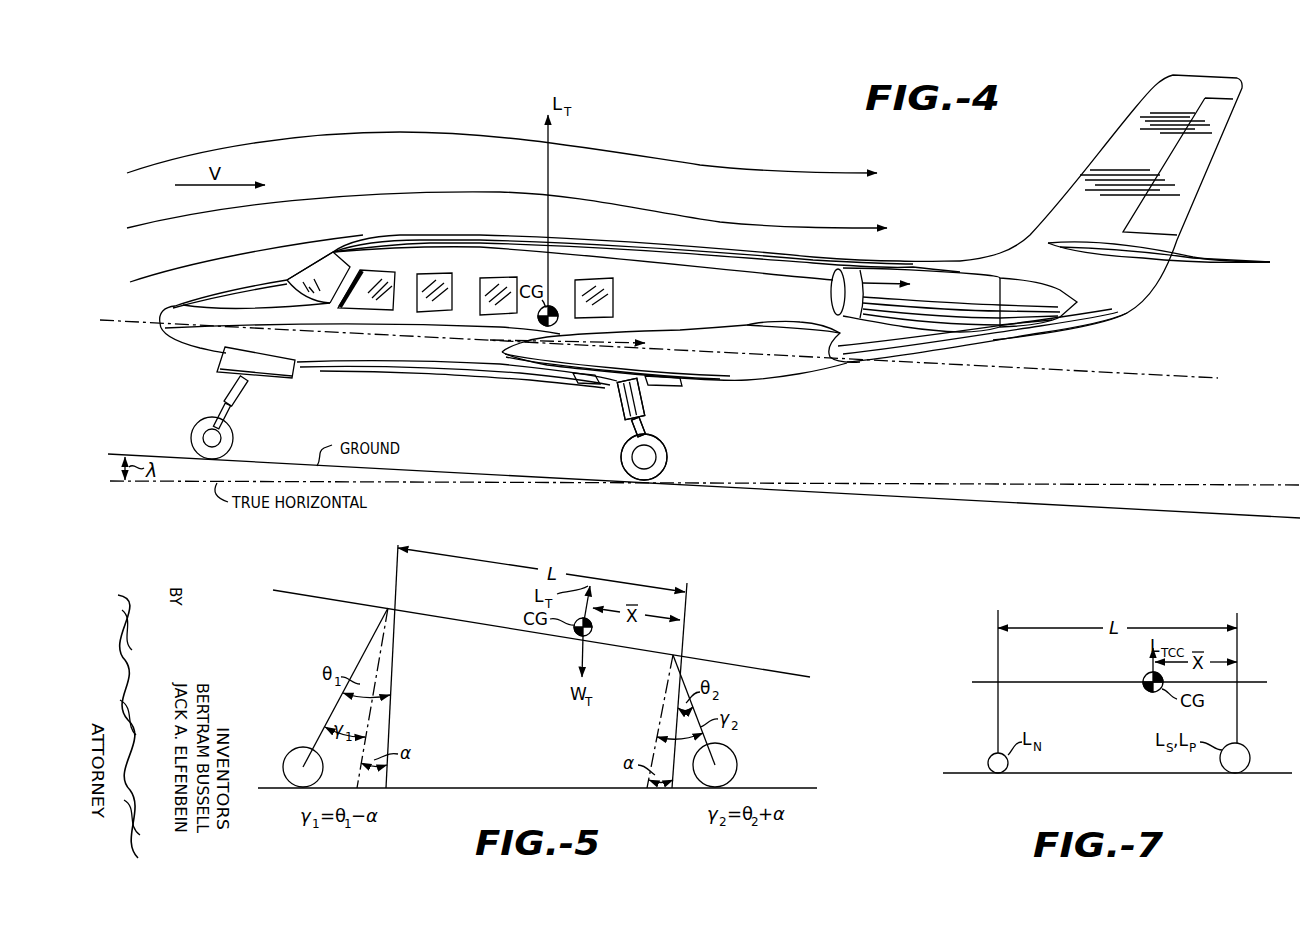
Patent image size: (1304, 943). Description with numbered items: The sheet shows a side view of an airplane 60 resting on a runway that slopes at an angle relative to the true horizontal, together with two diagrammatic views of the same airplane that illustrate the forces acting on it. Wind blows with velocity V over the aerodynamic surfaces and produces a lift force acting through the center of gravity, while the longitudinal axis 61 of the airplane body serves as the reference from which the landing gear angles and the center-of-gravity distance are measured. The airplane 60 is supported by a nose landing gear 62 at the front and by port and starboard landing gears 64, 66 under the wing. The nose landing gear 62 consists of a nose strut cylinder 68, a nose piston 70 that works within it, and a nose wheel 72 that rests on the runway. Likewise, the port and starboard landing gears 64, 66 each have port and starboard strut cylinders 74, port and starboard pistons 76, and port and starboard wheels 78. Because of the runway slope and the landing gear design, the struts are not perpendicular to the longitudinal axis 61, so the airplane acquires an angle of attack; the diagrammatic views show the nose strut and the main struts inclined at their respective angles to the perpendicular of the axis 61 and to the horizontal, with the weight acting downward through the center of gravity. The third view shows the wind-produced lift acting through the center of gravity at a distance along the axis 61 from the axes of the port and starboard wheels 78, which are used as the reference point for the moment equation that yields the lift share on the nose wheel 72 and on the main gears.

In FIG. 4, the airplane 60 is at (441, 232).
In FIG. 4, the longitudinal axis 61 is at (118, 320).
In FIG. 5, the longitudinal axis 61 is at (314, 594).
In FIG. 7, the longitudinal axis 61 is at (980, 681).
In FIG. 4, the nose landing gear 62 is at (227, 387).
In FIG. 5, the nose landing gear 62 is at (367, 650).
In FIG. 4, the port landing gear 64 is at (615, 400).
In FIG. 4, the starboard landing gear 66 is at (642, 429).
In FIG. 4, the nose strut cylinder 68 is at (241, 389).
In FIG. 4, the nose piston 70 is at (233, 415).
In FIG. 4, the nose wheel 72 is at (233, 436).
In FIG. 5, the nose wheel 72 is at (293, 748).
In FIG. 4, the port and starboard strut cylinders 74 is at (641, 398).
In FIG. 4, the port and starboard pistons 76 is at (644, 428).
In FIG. 4, the port and starboard wheels 78 is at (668, 452).
In FIG. 5, the port and starboard wheels 78 is at (737, 744).